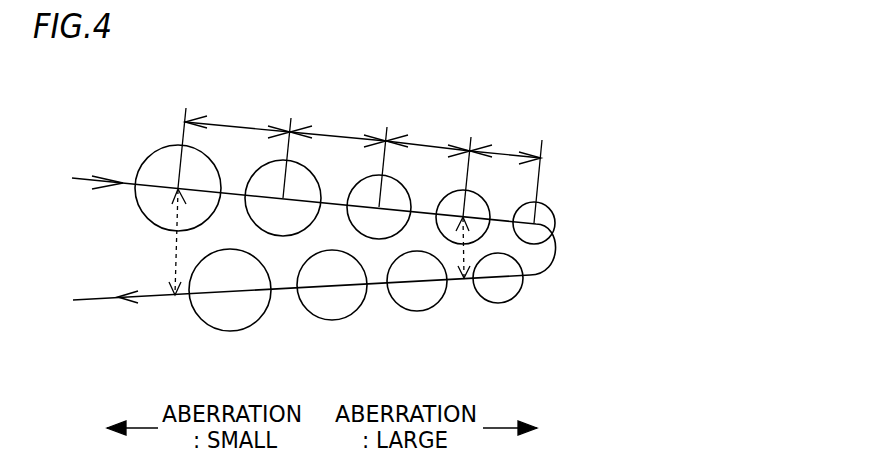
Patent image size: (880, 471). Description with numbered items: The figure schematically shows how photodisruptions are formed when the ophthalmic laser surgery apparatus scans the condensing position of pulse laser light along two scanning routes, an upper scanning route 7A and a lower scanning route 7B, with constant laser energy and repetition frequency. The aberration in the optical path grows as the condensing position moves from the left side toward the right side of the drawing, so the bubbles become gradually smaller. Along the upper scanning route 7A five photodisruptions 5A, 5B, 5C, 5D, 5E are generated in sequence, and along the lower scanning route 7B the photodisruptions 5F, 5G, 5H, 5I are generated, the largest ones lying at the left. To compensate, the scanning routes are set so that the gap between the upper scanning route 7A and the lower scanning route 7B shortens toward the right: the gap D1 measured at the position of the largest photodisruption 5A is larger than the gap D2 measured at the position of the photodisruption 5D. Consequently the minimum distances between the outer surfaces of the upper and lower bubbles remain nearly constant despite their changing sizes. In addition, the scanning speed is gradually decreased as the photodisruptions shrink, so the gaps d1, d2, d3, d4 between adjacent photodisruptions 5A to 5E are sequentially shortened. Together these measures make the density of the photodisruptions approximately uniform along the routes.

The upper scanning route 7A is at (122, 182).
The lower scanning route 7B is at (93, 300).
The photodisruption 5A is at (147, 158).
The photodisruption 5B is at (254, 175).
The photodisruption 5C is at (353, 187).
The photodisruption 5D is at (443, 202).
The photodisruption 5E is at (519, 207).
The photodisruption 5F is at (499, 303).
The photodisruption 5G is at (417, 311).
The photodisruption 5H is at (331, 320).
The photodisruption 5I is at (229, 331).
The gap between adjacent photodisruptions d1 is at (234, 148).
The gap between adjacent photodisruptions d2 is at (338, 158).
The gap between adjacent photodisruptions d3 is at (428, 168).
The gap between adjacent photodisruptions d4 is at (506, 175).
The gap between scanning routes D1 is at (181, 243).
The gap between scanning routes D2 is at (464, 280).